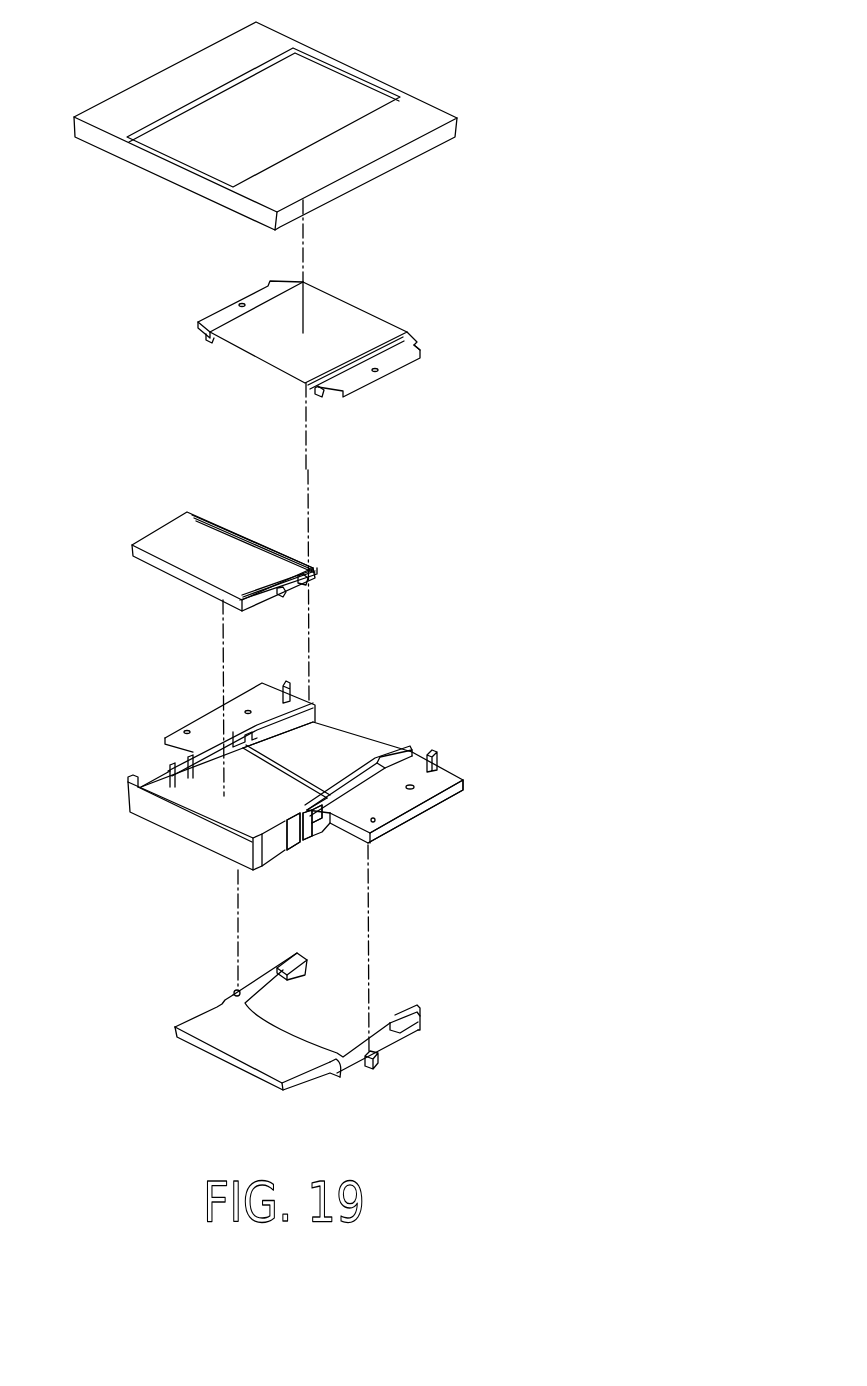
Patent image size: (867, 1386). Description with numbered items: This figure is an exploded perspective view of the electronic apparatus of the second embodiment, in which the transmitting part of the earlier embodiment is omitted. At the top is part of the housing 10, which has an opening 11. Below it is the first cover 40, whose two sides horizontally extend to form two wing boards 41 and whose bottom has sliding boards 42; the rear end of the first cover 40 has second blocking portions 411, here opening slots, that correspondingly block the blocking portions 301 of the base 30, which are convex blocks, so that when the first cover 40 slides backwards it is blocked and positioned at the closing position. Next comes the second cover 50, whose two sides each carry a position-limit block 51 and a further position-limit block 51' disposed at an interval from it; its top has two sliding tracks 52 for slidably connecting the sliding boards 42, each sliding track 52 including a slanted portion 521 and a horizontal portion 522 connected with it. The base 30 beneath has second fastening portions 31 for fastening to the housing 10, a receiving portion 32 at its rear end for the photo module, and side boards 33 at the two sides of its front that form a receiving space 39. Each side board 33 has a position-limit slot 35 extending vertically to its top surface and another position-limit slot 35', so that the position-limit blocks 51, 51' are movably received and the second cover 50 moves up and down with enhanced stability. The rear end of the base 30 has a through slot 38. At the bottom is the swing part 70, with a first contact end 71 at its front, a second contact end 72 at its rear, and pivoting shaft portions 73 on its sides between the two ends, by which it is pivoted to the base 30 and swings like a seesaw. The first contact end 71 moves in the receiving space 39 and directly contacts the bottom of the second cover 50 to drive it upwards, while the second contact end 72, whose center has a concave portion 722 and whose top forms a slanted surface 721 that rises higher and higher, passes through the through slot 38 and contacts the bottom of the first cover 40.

The housing 10 is at (450, 80).
The opening 11 is at (327, 98).
The first cover 40 is at (368, 292).
The wing board 41 is at (400, 368).
The second blocking portion 411 is at (418, 347).
The sliding board 42 is at (322, 395).
The second cover 50 is at (148, 583).
The position-limit block 51 is at (317, 615).
The position-limit block 51' is at (345, 585).
The sliding track 52 is at (265, 445).
The slanted portion 521 is at (287, 567).
The horizontal portion 522 is at (263, 583).
The base 30 is at (158, 843).
The blocking portion 301 is at (430, 748).
The second fastening portion 31 is at (413, 788).
The receiving portion 32 is at (338, 752).
The side board 33 is at (307, 837).
The position-limit slot 35 is at (282, 873).
The position-limit slot 35' is at (370, 846).
The through slot 38 is at (397, 768).
The receiving space 39 is at (243, 807).
The swing part 70 is at (280, 1020).
The first contact end 71 is at (228, 1062).
The second contact end 72 is at (336, 1010).
The slanted surface 721 is at (402, 1012).
The concave portion 722 is at (325, 1012).
The pivoting shaft portion 73 is at (380, 1062).